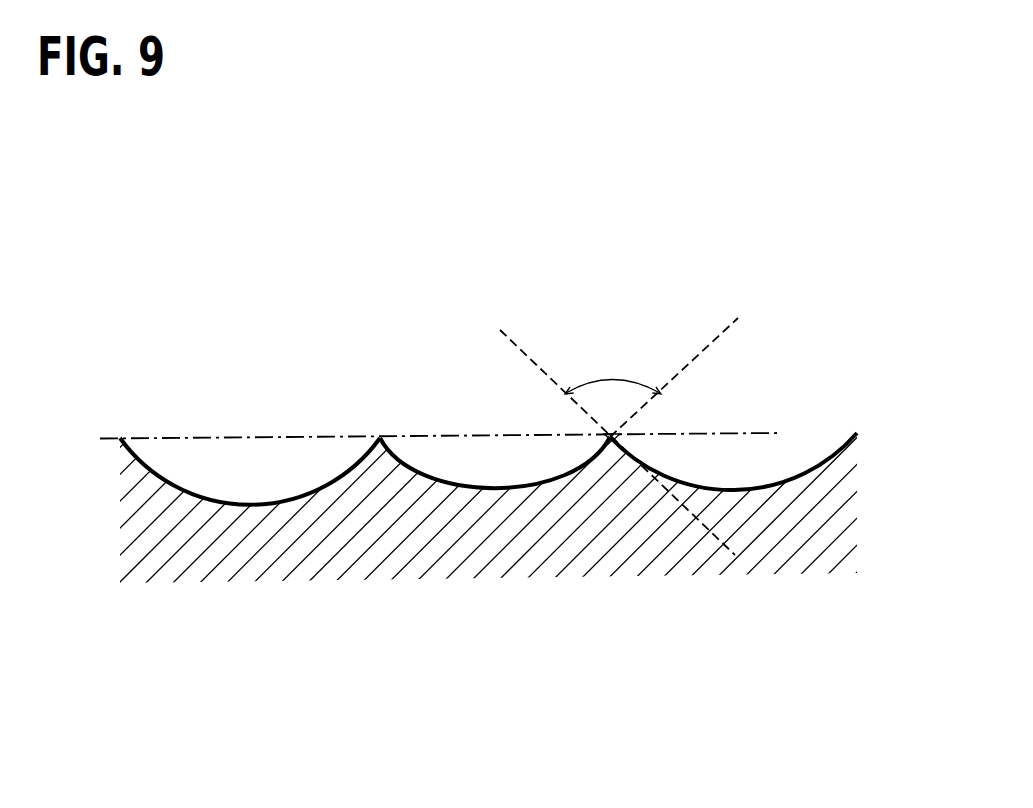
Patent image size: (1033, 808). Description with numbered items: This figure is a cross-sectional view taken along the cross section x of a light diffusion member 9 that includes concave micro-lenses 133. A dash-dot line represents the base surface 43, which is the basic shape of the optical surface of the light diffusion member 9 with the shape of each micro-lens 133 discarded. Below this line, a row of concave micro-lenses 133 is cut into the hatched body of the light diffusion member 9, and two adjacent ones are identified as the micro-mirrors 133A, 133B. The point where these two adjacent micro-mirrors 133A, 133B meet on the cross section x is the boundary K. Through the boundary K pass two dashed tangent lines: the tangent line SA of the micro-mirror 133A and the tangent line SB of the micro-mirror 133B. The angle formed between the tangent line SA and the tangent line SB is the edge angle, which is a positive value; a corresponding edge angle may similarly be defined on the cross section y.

The light diffusion member 9 is at (771, 230).
The concave micro-lens 133 is at (235, 517).
The base surface 43 is at (305, 436).
The micro-mirror 133A is at (480, 507).
The micro-mirror 133B is at (753, 500).
The tangent line SB is at (522, 356).
The tangent line SA is at (720, 333).
The boundary K is at (611, 442).